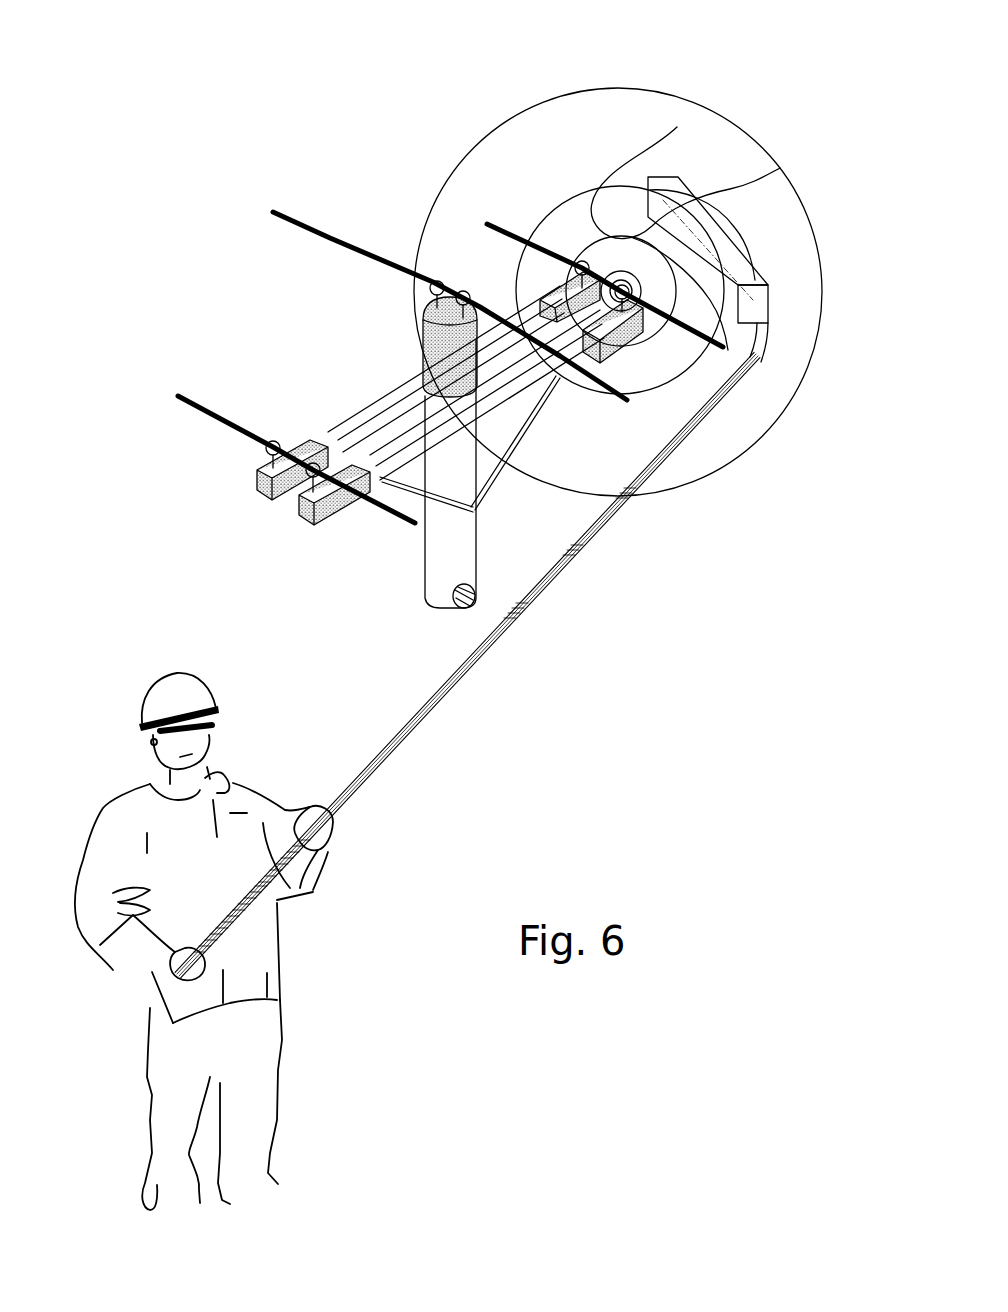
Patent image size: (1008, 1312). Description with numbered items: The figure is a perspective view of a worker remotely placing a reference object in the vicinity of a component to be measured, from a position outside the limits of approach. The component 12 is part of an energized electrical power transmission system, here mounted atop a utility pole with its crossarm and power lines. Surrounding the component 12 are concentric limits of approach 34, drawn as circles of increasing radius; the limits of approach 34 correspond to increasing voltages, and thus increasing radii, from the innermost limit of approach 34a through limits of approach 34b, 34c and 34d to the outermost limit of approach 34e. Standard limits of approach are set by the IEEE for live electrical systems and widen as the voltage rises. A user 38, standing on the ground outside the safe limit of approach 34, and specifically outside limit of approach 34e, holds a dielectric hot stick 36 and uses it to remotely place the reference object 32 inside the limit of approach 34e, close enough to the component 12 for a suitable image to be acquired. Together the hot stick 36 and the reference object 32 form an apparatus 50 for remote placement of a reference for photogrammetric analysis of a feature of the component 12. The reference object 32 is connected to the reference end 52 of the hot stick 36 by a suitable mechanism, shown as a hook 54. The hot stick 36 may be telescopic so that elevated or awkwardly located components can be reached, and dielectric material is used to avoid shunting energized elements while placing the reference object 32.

The component 12 is at (590, 137).
The limits of approach 34 is at (503, 116).
The limit of approach 34a is at (800, 268).
The limit of approach 34b is at (740, 190).
The limit of approach 34c is at (677, 127).
The limit of approach 34d is at (537, 235).
The limit of approach 34e is at (464, 162).
The reference end 52 is at (800, 272).
The reference object 32 is at (763, 295).
The hook 54 is at (756, 353).
The hot stick 36 is at (395, 741).
The user 38 is at (128, 797).
The apparatus 50 is at (497, 712).